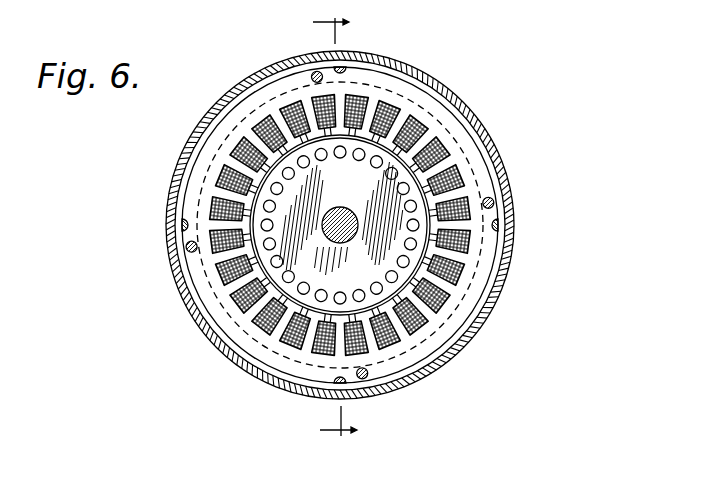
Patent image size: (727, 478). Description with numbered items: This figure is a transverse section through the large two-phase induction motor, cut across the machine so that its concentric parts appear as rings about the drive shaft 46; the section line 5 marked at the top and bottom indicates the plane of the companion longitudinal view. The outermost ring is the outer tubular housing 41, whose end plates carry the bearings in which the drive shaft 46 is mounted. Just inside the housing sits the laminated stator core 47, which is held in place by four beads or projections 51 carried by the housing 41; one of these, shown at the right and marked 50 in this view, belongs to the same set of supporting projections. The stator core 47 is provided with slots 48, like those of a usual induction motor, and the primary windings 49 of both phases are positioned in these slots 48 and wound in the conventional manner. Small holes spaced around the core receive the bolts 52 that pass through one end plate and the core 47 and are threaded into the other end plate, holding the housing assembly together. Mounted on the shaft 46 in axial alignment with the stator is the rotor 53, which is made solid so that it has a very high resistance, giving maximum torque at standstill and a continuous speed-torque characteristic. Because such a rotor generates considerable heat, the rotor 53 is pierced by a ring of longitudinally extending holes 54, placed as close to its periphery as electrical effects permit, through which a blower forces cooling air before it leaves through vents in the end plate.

The section line 5— 5 is at (335, 230).
The outer tubular housing 41 is at (185, 153).
The drive shaft 46 is at (330, 236).
The stator core 47 is at (478, 282).
The slots 48 is at (438, 142).
The primary windings 49 is at (470, 167).
The locating lug 50 is at (502, 222).
The beads or projections 51 is at (340, 62).
The bolts 52 is at (314, 72).
The rotor 53 is at (450, 302).
The longitudinally extending holes 54 is at (359, 152).